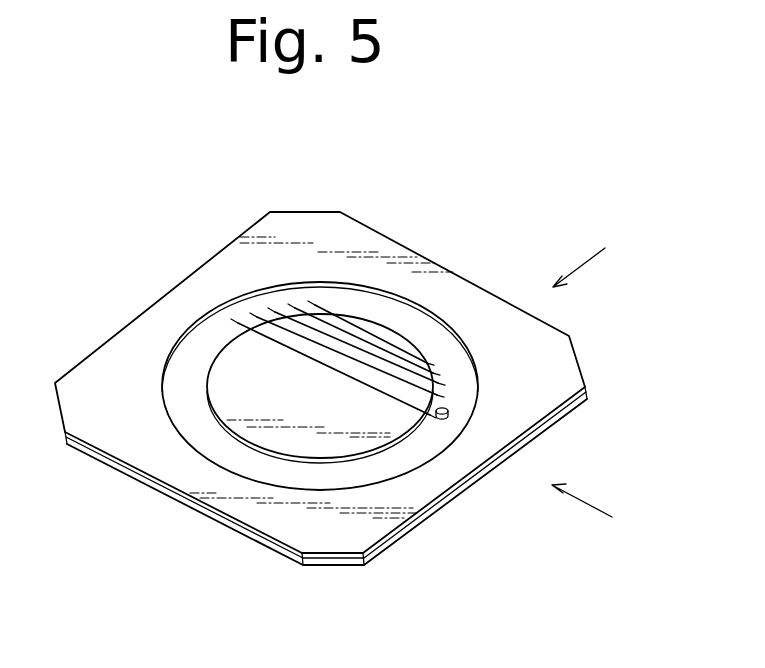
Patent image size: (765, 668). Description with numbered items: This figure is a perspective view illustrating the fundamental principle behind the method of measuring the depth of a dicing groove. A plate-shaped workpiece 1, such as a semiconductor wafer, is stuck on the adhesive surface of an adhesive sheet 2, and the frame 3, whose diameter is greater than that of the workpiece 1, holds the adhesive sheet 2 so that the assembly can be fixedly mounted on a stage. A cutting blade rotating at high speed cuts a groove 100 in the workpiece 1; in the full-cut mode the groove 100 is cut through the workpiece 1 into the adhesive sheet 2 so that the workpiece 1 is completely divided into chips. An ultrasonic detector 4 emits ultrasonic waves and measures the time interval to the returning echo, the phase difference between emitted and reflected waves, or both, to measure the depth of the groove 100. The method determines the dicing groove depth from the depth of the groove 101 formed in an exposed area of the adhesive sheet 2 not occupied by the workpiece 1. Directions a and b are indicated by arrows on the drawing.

The workpiece 1 is at (282, 443).
The adhesive sheet 2 is at (208, 440).
The frame 3 is at (108, 437).
The ultrasonic detector 4 is at (447, 423).
The groove 100 is at (375, 333).
The groove in exposed area of adhesive sheet 101 is at (300, 312).
The direction a is at (595, 513).
The direction b is at (593, 257).